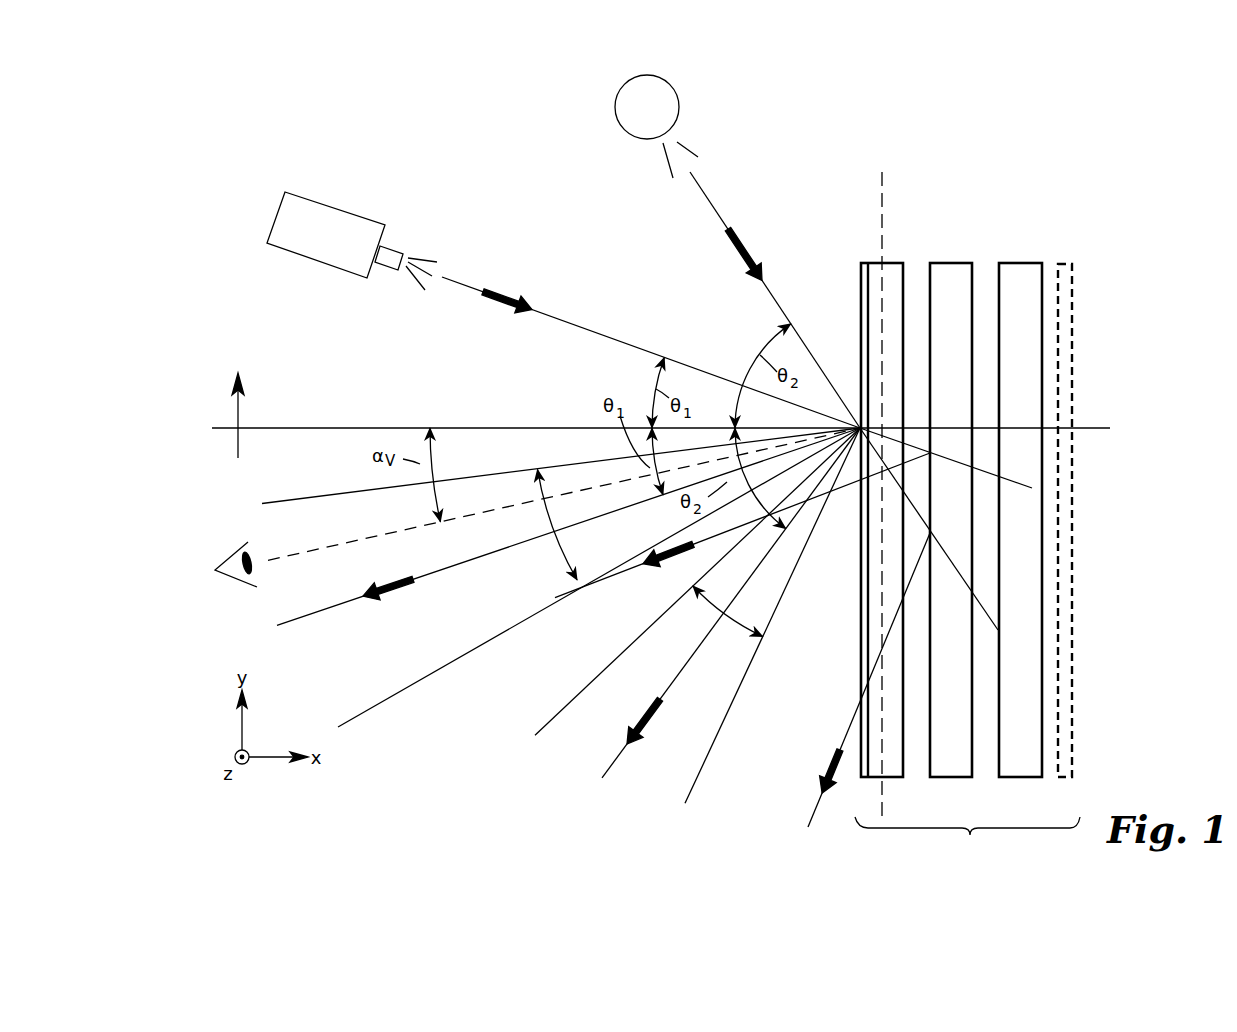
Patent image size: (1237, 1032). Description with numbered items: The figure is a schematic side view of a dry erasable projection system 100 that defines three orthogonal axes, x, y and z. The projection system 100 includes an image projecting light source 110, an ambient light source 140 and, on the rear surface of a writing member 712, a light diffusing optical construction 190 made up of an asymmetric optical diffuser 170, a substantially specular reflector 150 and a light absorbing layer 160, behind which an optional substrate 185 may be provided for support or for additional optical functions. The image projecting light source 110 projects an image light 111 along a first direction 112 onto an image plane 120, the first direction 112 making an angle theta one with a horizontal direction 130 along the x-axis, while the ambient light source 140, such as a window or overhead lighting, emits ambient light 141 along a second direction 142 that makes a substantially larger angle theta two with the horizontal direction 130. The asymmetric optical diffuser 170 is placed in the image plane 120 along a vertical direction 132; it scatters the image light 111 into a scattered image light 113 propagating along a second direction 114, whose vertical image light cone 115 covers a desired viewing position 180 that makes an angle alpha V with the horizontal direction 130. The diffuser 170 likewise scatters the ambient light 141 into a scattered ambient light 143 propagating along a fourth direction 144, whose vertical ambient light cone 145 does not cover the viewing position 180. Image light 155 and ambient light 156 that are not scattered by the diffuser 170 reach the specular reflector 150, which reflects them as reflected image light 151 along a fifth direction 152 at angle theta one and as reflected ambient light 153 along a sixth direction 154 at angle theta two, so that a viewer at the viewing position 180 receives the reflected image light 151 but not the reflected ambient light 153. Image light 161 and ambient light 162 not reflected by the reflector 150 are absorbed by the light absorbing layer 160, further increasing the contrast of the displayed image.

The dry erasable projection system 100 is at (1103, 192).
The image projecting light source 110 is at (333, 215).
The image light 111 is at (420, 256).
The first direction 112 is at (500, 290).
The scattered image light 113 is at (458, 563).
The second direction 114 is at (385, 582).
The vertical image light cone 115 is at (553, 546).
The image plane 120 is at (882, 183).
The horizontal direction 130 is at (297, 423).
The vertical direction 132 is at (235, 408).
The ambient light source 140 is at (667, 100).
The ambient light 141 is at (687, 145).
The second direction 142 is at (740, 240).
The scattered ambient light 143 is at (613, 770).
The fourth direction 144 is at (655, 715).
The vertical ambient light cone 145 is at (727, 620).
The substantially specular reflector 150 is at (945, 272).
The reflected image light 151 is at (603, 583).
The fifth direction 152 is at (648, 574).
The reflected ambient light 153 is at (810, 818).
The sixth direction 154 is at (828, 752).
The image light 155 is at (913, 443).
The ambient light 156 is at (915, 512).
The light absorbing layer 160 is at (1015, 272).
The image light 161 is at (990, 470).
The ambient light 162 is at (985, 610).
The asymmetric optical diffuser 170 is at (872, 272).
The desired viewing position 180 is at (232, 567).
The optional substrate 185 is at (1072, 310).
The light diffusing optical construction 190 is at (967, 839).
The writing member 712 is at (860, 297).